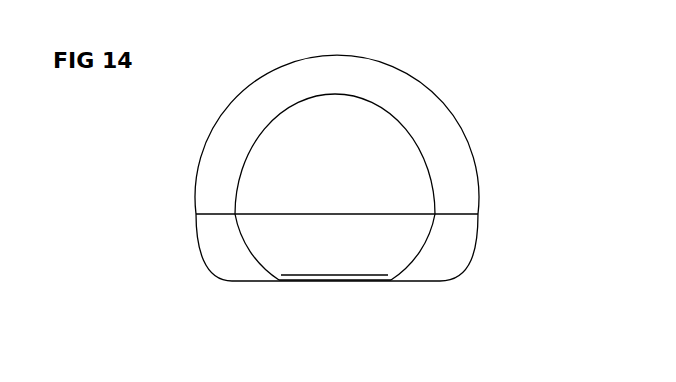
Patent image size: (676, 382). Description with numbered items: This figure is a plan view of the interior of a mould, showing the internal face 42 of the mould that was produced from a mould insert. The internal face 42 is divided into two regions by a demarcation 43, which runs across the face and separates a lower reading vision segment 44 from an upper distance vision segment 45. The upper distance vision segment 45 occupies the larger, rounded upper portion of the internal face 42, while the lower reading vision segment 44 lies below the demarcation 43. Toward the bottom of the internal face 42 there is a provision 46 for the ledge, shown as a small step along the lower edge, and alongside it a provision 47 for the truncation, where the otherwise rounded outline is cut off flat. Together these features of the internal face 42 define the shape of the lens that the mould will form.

The internal face 42 is at (327, 166).
The demarcation 43 is at (405, 215).
The lower reading vision segment 44 is at (400, 233).
The upper distance vision segment 45 is at (392, 168).
The provision for the ledge 46 is at (288, 282).
The provision for the truncation 47 is at (370, 276).